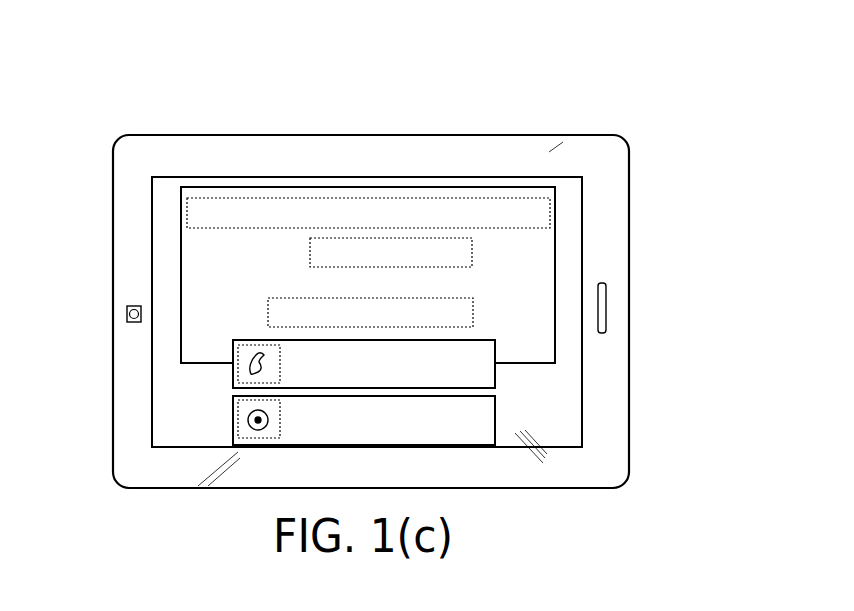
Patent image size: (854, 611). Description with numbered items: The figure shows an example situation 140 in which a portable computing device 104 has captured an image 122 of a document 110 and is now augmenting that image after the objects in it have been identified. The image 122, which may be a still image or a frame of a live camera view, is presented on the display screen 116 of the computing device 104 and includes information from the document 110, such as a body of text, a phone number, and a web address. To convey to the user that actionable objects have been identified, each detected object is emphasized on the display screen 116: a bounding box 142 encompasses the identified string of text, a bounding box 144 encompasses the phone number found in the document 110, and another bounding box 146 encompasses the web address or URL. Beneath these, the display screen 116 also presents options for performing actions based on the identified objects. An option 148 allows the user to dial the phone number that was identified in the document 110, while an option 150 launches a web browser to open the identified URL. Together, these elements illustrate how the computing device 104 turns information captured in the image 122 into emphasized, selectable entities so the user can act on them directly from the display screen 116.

The computing device 104 is at (272, 135).
The display screen 116 is at (410, 172).
The image 122 is at (493, 187).
The document 110 is at (555, 228).
The bounding box 142 is at (557, 250).
The bounding box 144 is at (482, 285).
The bounding box 146 is at (495, 342).
The option 148 is at (228, 378).
The option 150 is at (228, 428).
The example situation 140 is at (749, 100).